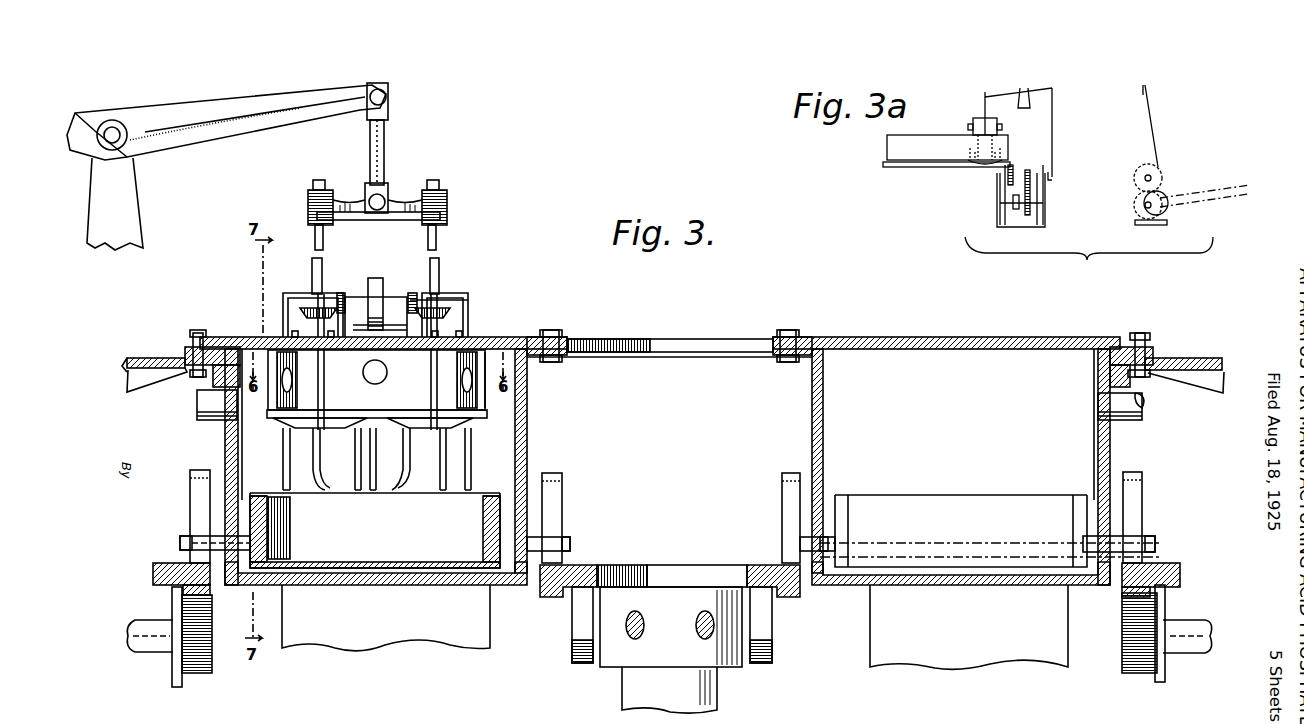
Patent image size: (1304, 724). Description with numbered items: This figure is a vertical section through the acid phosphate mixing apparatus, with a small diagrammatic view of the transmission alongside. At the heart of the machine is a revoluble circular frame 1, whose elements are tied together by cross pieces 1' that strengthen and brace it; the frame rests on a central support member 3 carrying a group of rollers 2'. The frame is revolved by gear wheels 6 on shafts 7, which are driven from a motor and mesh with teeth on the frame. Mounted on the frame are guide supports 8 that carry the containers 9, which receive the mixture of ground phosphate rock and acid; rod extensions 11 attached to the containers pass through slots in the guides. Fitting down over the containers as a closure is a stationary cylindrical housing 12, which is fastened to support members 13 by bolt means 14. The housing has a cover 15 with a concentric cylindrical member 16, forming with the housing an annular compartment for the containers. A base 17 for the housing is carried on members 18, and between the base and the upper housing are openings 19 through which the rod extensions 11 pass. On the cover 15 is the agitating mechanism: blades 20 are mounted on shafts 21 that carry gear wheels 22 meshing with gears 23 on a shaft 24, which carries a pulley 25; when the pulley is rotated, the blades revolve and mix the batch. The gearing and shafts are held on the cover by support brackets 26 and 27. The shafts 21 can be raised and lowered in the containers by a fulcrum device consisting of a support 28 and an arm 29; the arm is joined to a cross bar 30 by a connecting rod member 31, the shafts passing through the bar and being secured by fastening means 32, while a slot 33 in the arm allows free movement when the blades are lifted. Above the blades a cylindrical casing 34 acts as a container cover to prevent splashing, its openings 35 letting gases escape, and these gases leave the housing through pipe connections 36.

The circular frame 1 is at (660, 567).
The cross pieces 1' is at (990, 534).
The rollers 2' is at (665, 614).
The central support member 3 is at (622, 690).
The gear wheels 6 is at (180, 687).
The shafts 7 is at (152, 622).
The guide supports 8 is at (190, 492).
The containers 9 is at (480, 525).
The rod extensions 11 is at (180, 540).
The stationary housing 12 is at (225, 452).
The support members 13 is at (145, 358).
The bolt means 14 is at (197, 333).
The cover 15 is at (512, 337).
The concentric cylindrical member 16 is at (528, 392).
The base 17 is at (258, 585).
The members 18 is at (918, 670).
The openings 19 is at (527, 533).
The blades 20 is at (282, 445).
The shafts 21 is at (324, 388).
The gear wheels 22 is at (318, 320).
The gears 23 is at (340, 292).
The shaft 24 is at (352, 297).
The pulley 25 is at (384, 293).
The support bracket 26 is at (470, 296).
The support bracket 27 is at (405, 320).
The support 28 is at (135, 195).
The arm 29 is at (231, 107).
The cross bar 30 is at (390, 195).
The connecting rod member 31 is at (388, 130).
The fastening means 32 is at (440, 198).
The slot 33 is at (372, 90).
The cylindrical casing 34 is at (490, 365).
The openings 35 is at (470, 375).
The pipe connections 36 is at (195, 407).